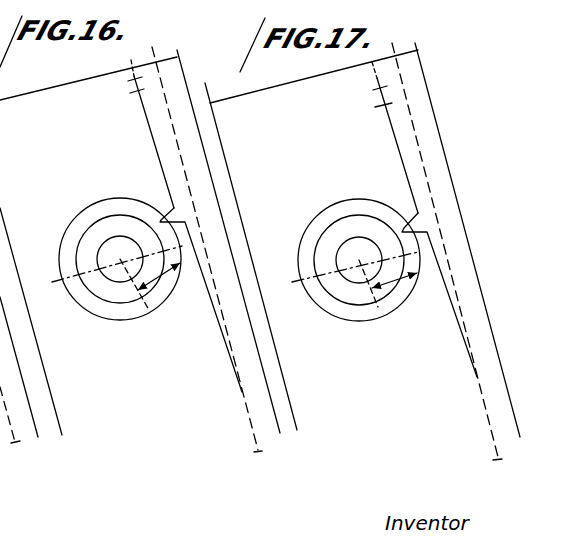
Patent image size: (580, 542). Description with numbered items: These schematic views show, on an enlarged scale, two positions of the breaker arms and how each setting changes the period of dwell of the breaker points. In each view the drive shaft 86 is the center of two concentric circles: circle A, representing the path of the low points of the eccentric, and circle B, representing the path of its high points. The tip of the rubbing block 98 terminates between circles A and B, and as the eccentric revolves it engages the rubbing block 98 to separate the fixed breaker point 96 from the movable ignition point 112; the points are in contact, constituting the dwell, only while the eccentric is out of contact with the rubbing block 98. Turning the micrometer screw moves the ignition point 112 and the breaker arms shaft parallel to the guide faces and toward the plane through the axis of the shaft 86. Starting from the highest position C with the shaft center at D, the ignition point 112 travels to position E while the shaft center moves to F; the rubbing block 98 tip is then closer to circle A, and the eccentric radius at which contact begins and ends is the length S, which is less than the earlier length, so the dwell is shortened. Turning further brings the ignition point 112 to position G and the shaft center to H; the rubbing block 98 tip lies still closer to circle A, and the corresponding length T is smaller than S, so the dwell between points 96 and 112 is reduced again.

In FIG. 16, the breaker point 96 is at (143, 83).
In FIG. 17, the breaker point 96 is at (390, 93).
In FIG. 16, the ignition point 112 is at (125, 93).
In FIG. 17, the ignition point 112 is at (378, 98).
In FIG. 16, the rubbing block 98 is at (168, 215).
In FIG. 17, the rubbing block 98 is at (413, 212).
In FIG. 16, the drive shaft 86 is at (117, 273).
In FIG. 17, the drive shaft 86 is at (355, 272).
In FIG. 16, the highest position of the breaker points C is at (148, 126).
In FIG. 17, the highest position of the breaker points C is at (389, 129).
In FIG. 16, the position of ignition point E is at (110, 73).
In FIG. 16, the circle of high points B is at (68, 228).
In FIG. 16, the circle of low points A is at (107, 303).
In FIG. 16, the eccentric radius length S is at (159, 276).
In FIG. 16, the position of breaker arms shaft center D is at (10, 427).
In FIG. 16, the position of breaker arms shaft F is at (258, 466).
In FIG. 17, the position of ignition point G is at (380, 90).
In FIG. 17, the eccentric radius length T is at (394, 277).
In FIG. 17, the position of breaker arms shaft H is at (487, 473).